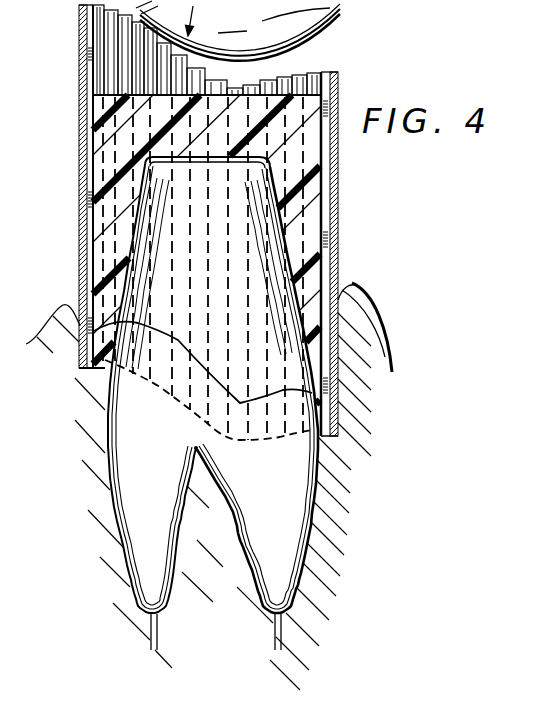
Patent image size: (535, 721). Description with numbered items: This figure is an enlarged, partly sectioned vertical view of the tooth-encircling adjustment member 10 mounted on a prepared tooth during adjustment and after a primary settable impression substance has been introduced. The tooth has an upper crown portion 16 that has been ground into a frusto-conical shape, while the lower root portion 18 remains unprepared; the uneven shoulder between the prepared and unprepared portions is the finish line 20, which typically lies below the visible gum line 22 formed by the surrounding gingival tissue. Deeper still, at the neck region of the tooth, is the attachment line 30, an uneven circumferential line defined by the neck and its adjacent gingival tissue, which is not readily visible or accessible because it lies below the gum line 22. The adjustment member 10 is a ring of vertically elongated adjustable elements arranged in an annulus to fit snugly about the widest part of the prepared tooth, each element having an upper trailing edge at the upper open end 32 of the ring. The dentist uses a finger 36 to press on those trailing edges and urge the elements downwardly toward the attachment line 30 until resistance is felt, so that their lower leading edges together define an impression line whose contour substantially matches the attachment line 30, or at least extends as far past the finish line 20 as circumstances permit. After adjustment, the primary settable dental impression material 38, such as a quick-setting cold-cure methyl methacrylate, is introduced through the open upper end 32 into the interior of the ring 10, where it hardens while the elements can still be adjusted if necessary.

The tooth-encircling adjustment member 10 is at (61, 115).
The upper crown portion 16 is at (229, 228).
The lower root portion 18 is at (110, 487).
The finish line 20 is at (176, 398).
The visible gum line 22 is at (345, 297).
The attachment line 30 is at (193, 413).
The upper open end 32 is at (307, 73).
The finger 36 is at (267, 22).
The primary settable dental impression material 38 is at (303, 203).